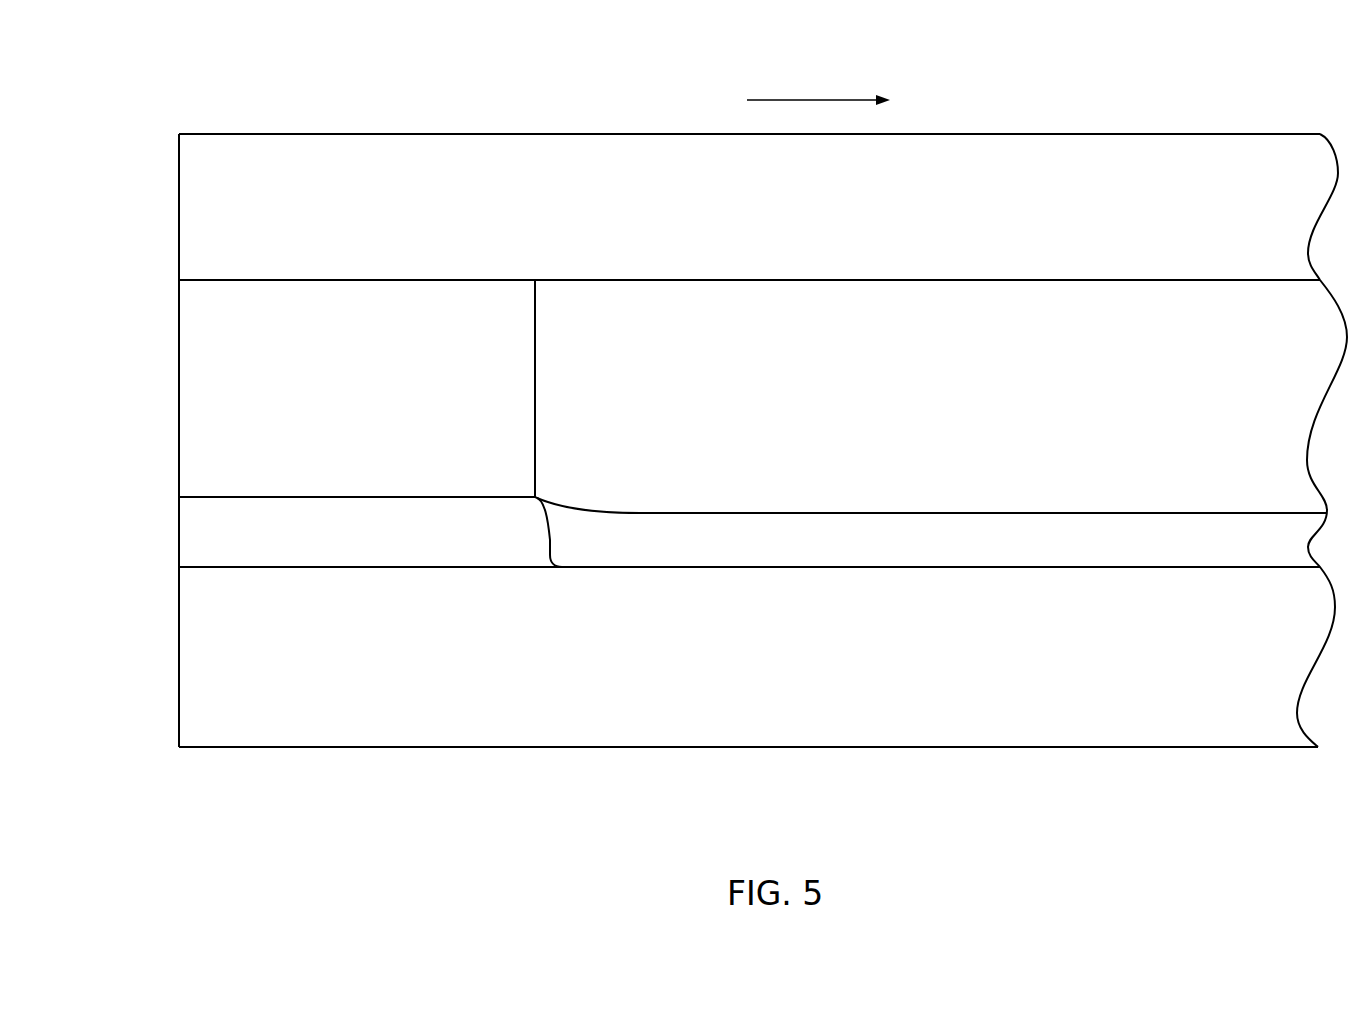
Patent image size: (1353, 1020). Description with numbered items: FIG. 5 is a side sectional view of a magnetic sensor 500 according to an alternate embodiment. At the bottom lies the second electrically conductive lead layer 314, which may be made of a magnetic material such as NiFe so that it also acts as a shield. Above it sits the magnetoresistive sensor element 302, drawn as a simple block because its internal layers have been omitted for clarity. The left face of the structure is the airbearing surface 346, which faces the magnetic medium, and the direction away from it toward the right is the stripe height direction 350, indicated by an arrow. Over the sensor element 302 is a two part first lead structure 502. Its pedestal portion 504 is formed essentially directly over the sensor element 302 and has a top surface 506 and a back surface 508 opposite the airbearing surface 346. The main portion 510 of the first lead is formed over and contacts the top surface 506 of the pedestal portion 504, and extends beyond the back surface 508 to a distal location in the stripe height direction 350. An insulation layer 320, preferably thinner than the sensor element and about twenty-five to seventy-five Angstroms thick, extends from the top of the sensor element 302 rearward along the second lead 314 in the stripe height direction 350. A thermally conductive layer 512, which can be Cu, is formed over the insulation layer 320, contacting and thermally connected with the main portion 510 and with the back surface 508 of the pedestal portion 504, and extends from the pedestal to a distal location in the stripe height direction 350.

The magnetic sensor 500 is at (1052, 70).
The airbearing surface 346 is at (179, 409).
The two part first lead structure 502 is at (525, 128).
The stripe height direction 350 is at (770, 100).
The top surface 506 is at (403, 280).
The main portion 510 is at (657, 216).
The back surface 508 is at (535, 374).
The pedestal portion 504 is at (290, 380).
The thermally conductive layer 512 is at (887, 386).
The insulation layer 320 is at (837, 544).
The sensor element 302 is at (276, 531).
The second electrically conductive lead layer 314 is at (677, 659).